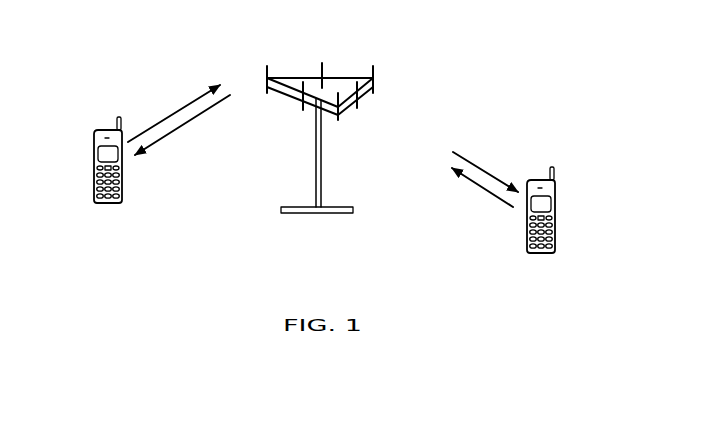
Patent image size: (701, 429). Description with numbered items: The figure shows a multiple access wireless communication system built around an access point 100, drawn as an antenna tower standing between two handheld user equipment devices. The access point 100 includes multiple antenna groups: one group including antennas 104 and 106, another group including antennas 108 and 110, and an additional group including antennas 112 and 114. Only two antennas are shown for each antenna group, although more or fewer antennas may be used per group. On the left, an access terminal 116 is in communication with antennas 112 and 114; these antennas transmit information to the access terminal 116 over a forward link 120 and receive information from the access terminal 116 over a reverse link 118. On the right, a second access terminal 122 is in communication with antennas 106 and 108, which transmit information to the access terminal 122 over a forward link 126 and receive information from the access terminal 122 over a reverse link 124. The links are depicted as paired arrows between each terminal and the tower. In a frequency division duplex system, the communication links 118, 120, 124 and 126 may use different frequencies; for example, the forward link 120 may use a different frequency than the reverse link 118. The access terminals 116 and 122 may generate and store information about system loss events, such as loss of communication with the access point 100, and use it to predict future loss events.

The access point 100 is at (323, 213).
The antenna 104 is at (339, 116).
The antenna 106 is at (358, 103).
The antenna 108 is at (375, 87).
The antenna 110 is at (322, 66).
The antenna 112 is at (267, 69).
The antenna 114 is at (303, 104).
The access terminal 116 is at (94, 146).
The reverse link 118 is at (182, 106).
The forward link 120 is at (167, 134).
The access terminal 122 is at (557, 202).
The reverse link 124 is at (490, 192).
The forward link 126 is at (482, 170).